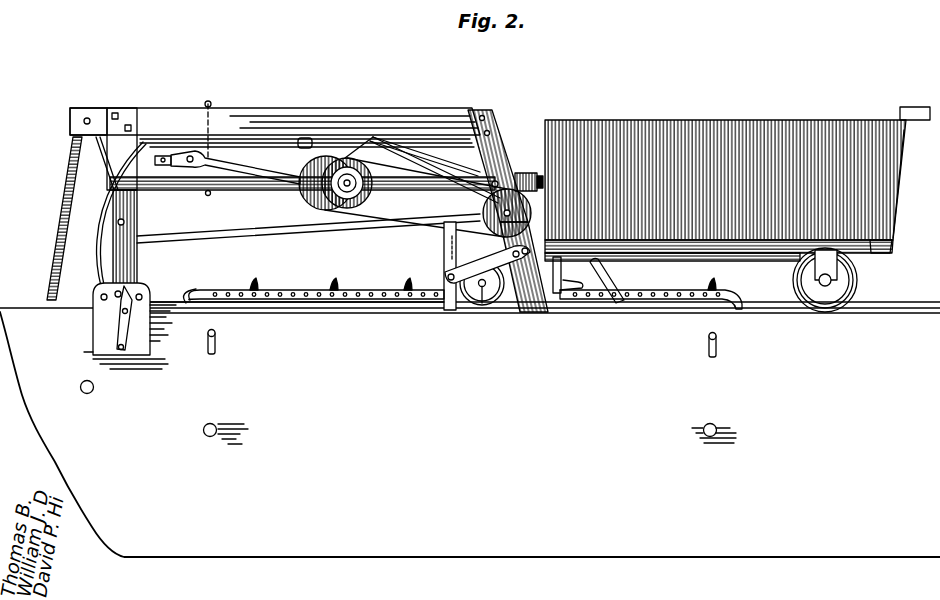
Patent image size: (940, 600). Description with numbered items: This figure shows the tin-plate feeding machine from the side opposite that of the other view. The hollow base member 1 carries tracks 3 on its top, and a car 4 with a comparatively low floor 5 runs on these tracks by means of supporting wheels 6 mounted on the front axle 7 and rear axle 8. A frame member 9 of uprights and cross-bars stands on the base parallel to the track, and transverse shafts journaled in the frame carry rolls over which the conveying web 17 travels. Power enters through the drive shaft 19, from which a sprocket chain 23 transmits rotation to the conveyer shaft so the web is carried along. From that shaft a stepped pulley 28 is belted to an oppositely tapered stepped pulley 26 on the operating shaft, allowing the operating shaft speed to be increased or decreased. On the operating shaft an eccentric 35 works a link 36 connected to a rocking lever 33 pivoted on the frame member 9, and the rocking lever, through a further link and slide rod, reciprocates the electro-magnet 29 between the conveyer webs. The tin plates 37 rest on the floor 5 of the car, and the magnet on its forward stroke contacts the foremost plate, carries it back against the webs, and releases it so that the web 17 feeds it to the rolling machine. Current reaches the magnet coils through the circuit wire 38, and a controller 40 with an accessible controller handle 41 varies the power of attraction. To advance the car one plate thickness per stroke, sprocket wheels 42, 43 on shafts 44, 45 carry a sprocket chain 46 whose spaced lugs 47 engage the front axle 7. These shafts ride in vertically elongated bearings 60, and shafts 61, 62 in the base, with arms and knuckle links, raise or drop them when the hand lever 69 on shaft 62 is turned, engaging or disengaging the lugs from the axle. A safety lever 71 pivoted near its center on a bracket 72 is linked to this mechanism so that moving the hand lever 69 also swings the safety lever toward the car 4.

The base member 1 is at (879, 551).
The track 3 is at (925, 300).
The car 4 is at (906, 213).
The floor 5 is at (870, 253).
The supporting wheel 6 is at (845, 283).
The front axle 7 is at (484, 290).
The rear axle 8 is at (820, 282).
The frame member 9 is at (178, 108).
The conveying web 17 is at (268, 235).
The drive shaft 19 is at (94, 387).
The sprocket chain 23 is at (58, 247).
The stepped pulley 26 is at (350, 205).
The stepped pulley 28 is at (490, 212).
The magnet 29 is at (518, 172).
The rocking lever 33 is at (168, 170).
The eccentric 35 is at (310, 192).
The link 36 is at (250, 180).
The tin plates 37 is at (655, 120).
The circuit wire 38 is at (305, 140).
The controller 40 is at (98, 321).
The controller handle 41 is at (132, 336).
The sprocket wheel 42 is at (200, 278).
The sprocket wheel 43 is at (708, 306).
The shaft 44 is at (216, 332).
The shaft 45 is at (717, 336).
The sprocket chain 46 is at (410, 306).
The lug 47 is at (262, 286).
The bearing 60 is at (213, 354).
The shaft 61 is at (716, 424).
The shaft 62 is at (206, 438).
The hand lever 69 is at (606, 280).
The safety lever 71 is at (443, 242).
The bracket 72 is at (463, 310).